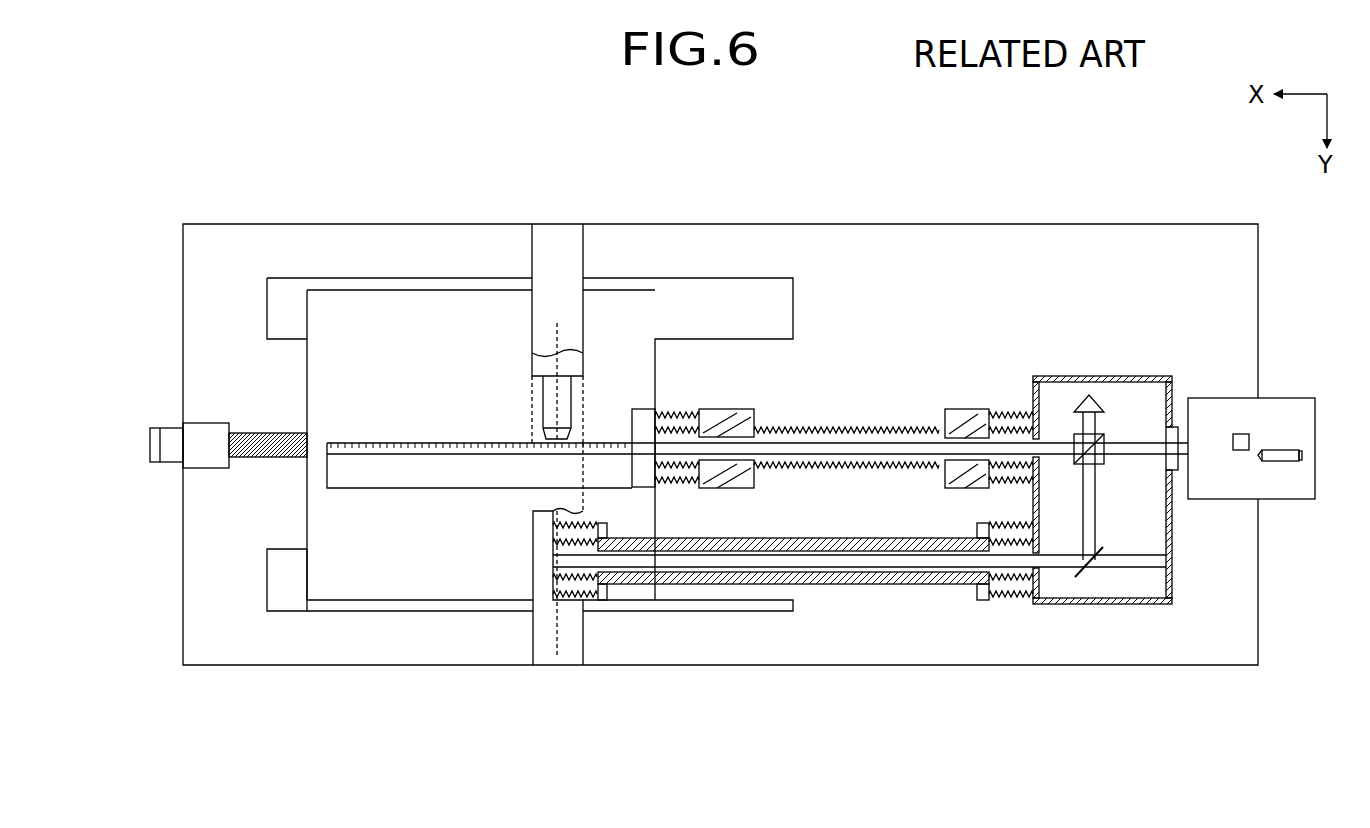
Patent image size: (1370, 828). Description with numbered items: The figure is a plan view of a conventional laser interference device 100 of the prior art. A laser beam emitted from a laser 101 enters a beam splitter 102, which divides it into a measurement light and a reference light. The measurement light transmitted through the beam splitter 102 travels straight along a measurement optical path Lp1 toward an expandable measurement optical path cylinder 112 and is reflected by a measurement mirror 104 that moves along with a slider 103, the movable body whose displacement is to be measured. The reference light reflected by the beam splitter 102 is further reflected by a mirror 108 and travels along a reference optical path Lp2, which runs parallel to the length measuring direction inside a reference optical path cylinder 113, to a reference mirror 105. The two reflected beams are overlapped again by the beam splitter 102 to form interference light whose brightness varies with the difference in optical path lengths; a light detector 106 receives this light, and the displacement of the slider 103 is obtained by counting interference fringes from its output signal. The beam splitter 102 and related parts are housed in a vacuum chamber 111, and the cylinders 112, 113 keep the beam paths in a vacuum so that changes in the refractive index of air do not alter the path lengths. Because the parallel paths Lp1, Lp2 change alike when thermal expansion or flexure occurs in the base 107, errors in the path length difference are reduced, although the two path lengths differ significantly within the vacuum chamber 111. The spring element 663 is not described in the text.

The laser interference device 100 is at (205, 188).
The laser 101 is at (1285, 447).
The beam splitter 102 is at (1098, 440).
The slider 103 is at (386, 312).
The measurement mirror 104 is at (657, 447).
The reference mirror 105 is at (556, 558).
The light detector 106 is at (1240, 432).
The base 107 is at (1063, 665).
The mirror 108 is at (1098, 565).
The vacuum chamber 111 is at (1083, 377).
The measurement optical path cylinder 112 is at (824, 416).
The reference optical path cylinder 113 is at (828, 531).
The spring 663 is at (1006, 560).
The measurement optical path Lp1 is at (915, 435).
The reference optical path Lp2 is at (870, 569).